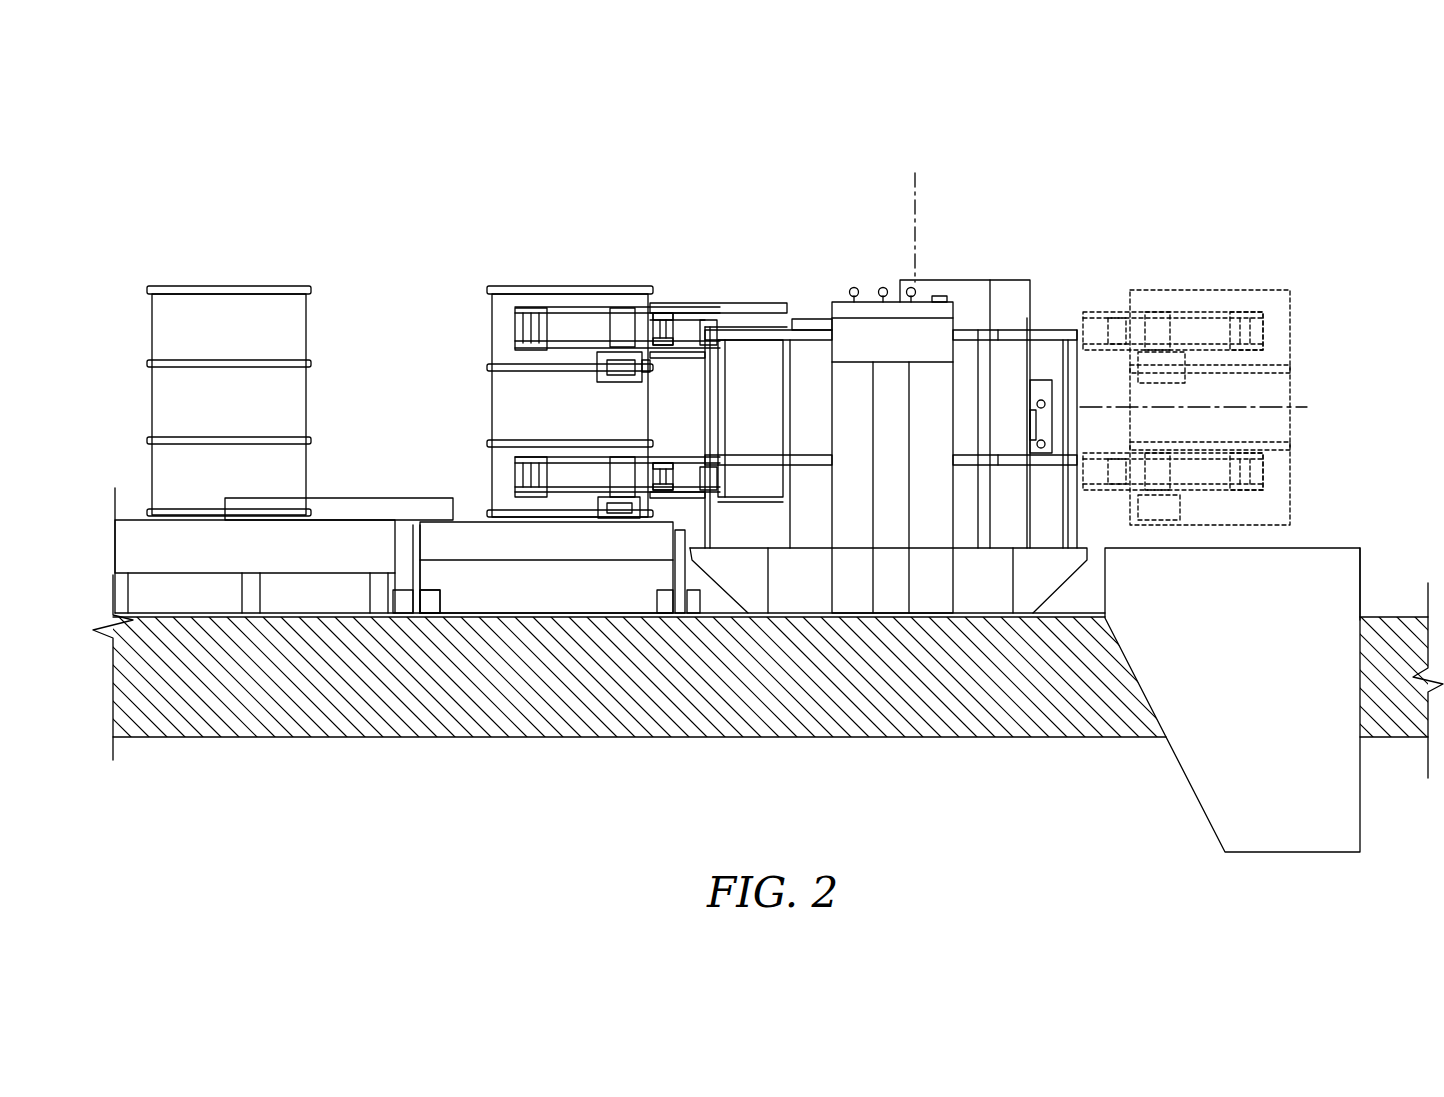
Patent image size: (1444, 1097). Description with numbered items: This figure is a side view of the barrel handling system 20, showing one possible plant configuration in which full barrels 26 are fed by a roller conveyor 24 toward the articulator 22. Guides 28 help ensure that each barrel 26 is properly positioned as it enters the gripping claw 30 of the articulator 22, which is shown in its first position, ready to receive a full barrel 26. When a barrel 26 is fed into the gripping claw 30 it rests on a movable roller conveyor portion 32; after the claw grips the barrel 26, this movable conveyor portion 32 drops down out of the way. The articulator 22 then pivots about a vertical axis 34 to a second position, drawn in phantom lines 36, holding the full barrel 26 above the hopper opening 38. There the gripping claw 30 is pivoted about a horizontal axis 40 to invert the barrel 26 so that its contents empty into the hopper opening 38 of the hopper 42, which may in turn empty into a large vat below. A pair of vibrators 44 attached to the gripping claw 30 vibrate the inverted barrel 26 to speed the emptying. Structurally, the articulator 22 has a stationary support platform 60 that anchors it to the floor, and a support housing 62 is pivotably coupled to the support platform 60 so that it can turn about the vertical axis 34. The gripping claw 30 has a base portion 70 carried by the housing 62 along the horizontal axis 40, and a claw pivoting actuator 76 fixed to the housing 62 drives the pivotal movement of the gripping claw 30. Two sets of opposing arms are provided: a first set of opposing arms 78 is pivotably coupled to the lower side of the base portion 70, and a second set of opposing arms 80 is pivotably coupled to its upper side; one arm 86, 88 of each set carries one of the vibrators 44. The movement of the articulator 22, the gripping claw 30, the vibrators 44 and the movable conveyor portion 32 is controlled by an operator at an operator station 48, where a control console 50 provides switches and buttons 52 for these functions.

The barrel handling system 20 is at (1235, 212).
The articulator 22 is at (972, 278).
The roller conveyor 24 is at (266, 561).
The barrel 26 is at (205, 300).
The guides 28 is at (330, 497).
The gripping claw 30 is at (735, 300).
The movable roller conveyor portion 32 is at (563, 554).
The vertical axis 34 is at (918, 180).
The second position 36 is at (1085, 312).
The hopper opening 38 is at (1332, 545).
The horizontal axis 40 is at (1308, 405).
The hopper 42 is at (1365, 573).
The vibrator 44 is at (615, 367).
The operator station 48 is at (851, 590).
The control console 50 is at (909, 351).
The switches and buttons 52 is at (851, 288).
The stationary support platform 60 is at (813, 590).
The support housing 62 is at (815, 318).
The base portion 70 is at (768, 408).
The claw pivoting actuator 76 is at (1040, 385).
The first set of opposing arms 78 is at (580, 455).
The second set of opposing arms 80 is at (573, 303).
The arm 86 is at (622, 470).
The arm 88 is at (622, 320).